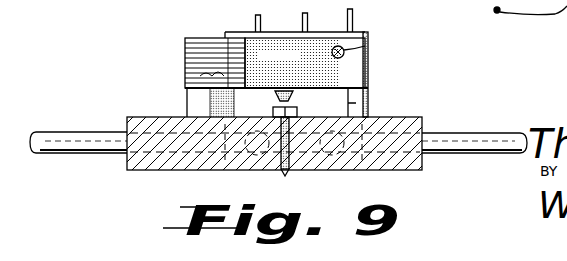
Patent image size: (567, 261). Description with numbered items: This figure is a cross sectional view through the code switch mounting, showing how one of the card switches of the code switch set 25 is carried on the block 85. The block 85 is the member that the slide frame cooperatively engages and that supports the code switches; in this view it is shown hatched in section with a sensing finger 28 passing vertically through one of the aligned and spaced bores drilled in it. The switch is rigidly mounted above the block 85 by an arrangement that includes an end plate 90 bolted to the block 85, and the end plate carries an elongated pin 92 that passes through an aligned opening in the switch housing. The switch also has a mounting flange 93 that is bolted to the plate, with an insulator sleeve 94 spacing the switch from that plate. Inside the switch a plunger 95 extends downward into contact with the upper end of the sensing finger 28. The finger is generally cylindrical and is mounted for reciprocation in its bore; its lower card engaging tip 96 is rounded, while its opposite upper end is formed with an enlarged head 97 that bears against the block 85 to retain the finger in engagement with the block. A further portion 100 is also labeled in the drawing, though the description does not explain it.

The code switch set 25 is at (376, 71).
The sensing finger 28 is at (290, 158).
The block 85 is at (422, 125).
The end plate 90 is at (345, 106).
The elongated pin 92 is at (368, 43).
The mounting flange 93 is at (196, 77).
The insulator sleeve 94 is at (188, 105).
The plunger 95 is at (294, 100).
The card engaging tip 96 is at (287, 176).
The enlarged head 97 is at (273, 105).
The rod 100 is at (503, 143).